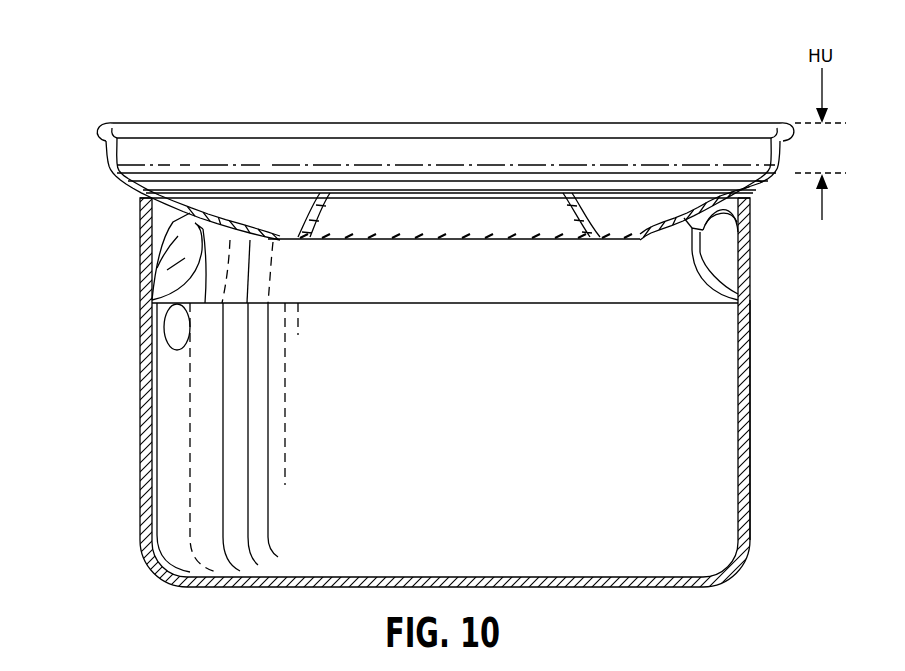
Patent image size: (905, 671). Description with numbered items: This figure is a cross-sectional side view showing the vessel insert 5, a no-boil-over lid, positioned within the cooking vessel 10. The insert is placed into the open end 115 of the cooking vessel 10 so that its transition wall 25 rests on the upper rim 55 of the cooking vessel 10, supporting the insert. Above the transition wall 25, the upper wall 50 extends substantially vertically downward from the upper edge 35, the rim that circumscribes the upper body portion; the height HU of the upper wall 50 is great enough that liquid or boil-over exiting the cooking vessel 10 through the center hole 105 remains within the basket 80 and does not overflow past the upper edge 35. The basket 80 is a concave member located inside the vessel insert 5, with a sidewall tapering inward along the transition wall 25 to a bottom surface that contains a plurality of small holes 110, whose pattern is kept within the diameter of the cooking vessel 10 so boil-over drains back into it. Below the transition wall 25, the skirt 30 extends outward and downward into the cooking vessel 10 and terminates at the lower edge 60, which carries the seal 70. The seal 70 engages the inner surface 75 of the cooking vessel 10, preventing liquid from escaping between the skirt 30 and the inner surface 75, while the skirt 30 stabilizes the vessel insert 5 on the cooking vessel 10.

The vessel insert 5 is at (103, 104).
The cooking vessel 10 is at (150, 592).
The transition wall 25 is at (118, 176).
The skirt 30 is at (165, 268).
The upper edge 35 is at (788, 120).
The upper wall 50 is at (650, 120).
The upper rim 55 is at (142, 202).
The lower edge 60 is at (734, 268).
The seal 70 is at (742, 303).
The inner surface 75 is at (745, 478).
The basket 80 is at (730, 170).
The center hole 105 is at (340, 195).
The small holes 110 is at (250, 236).
The open end 115 is at (710, 248).